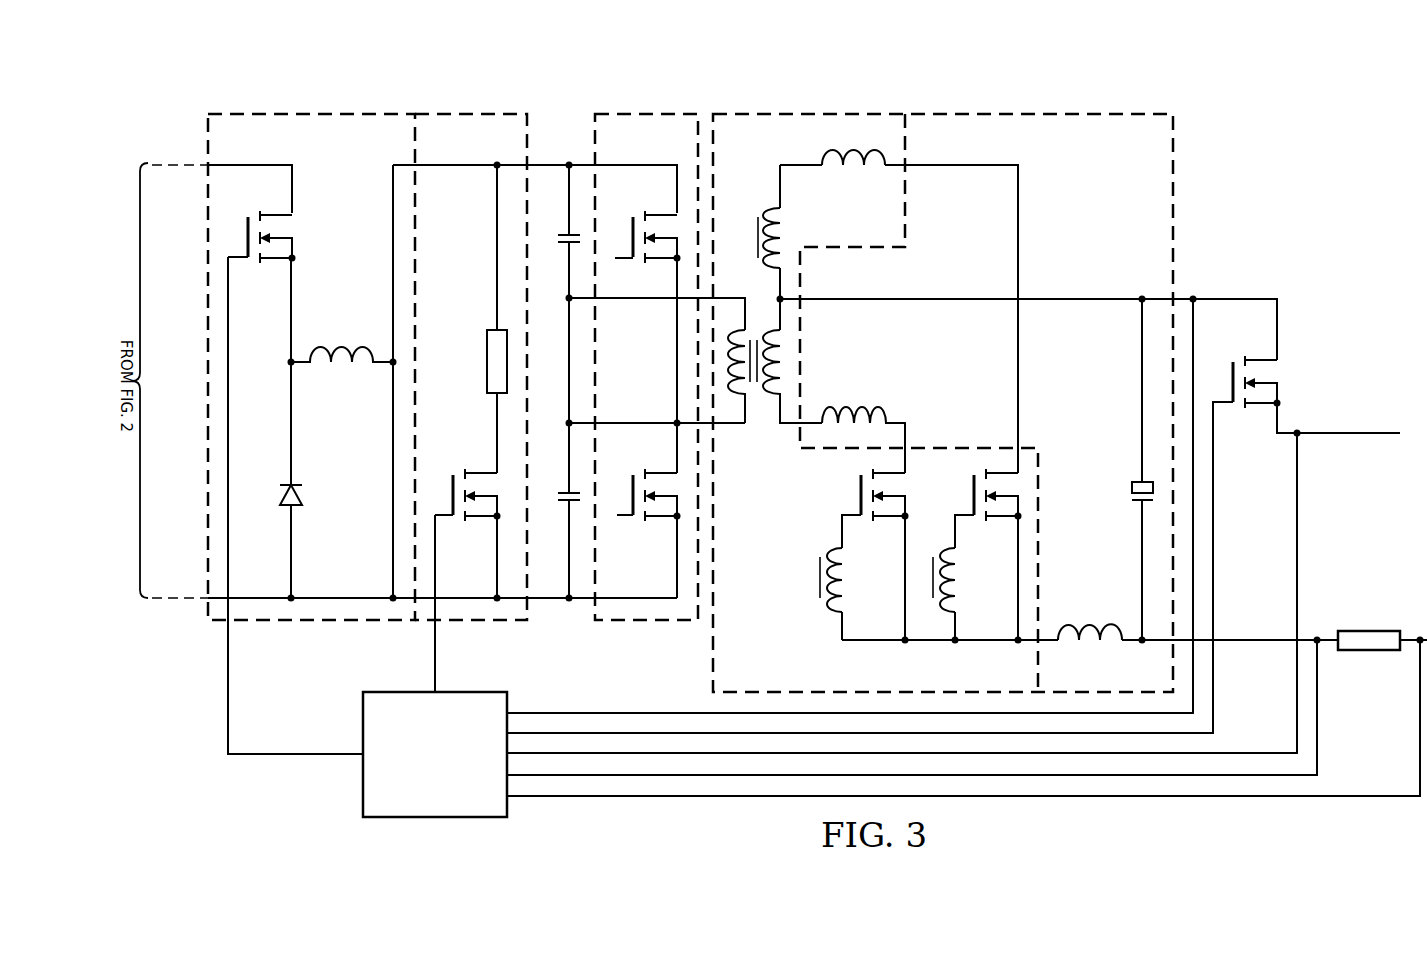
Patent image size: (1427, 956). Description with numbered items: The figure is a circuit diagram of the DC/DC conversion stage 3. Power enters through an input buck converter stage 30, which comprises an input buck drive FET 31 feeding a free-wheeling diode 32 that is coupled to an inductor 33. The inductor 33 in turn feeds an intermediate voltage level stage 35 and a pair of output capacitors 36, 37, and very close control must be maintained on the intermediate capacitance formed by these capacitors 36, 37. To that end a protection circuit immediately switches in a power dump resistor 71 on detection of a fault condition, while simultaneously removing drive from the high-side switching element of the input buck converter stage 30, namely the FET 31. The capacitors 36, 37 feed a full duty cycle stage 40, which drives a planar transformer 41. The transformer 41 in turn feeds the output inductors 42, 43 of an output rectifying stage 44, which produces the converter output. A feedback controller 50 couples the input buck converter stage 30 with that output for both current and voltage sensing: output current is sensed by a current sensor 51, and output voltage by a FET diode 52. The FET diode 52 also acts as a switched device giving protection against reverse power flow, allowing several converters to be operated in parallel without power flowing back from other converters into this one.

The DC/DC conversion stage 3 is at (1284, 147).
The input buck converter stage 30 is at (304, 114).
The input buck drive FET 31 is at (246, 224).
The free-wheeling diode 32 is at (304, 498).
The inductor 33 is at (334, 343).
The intermediate voltage level stage 35 is at (450, 114).
The output capacitor 36 is at (557, 237).
The output capacitor 37 is at (558, 498).
The full duty cycle stage 40 is at (643, 114).
The planar transformer 41 is at (820, 114).
The output inductor 42 is at (862, 407).
The output inductor 43 is at (1098, 627).
The output rectifying stage 44 is at (1041, 114).
The feedback controller 50 is at (450, 797).
The current sensor 51 is at (1372, 652).
The FET diode 52 is at (1232, 378).
The power dump resistor 71 is at (485, 362).